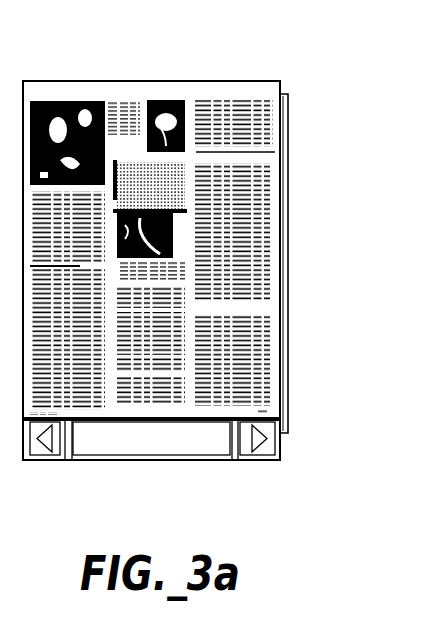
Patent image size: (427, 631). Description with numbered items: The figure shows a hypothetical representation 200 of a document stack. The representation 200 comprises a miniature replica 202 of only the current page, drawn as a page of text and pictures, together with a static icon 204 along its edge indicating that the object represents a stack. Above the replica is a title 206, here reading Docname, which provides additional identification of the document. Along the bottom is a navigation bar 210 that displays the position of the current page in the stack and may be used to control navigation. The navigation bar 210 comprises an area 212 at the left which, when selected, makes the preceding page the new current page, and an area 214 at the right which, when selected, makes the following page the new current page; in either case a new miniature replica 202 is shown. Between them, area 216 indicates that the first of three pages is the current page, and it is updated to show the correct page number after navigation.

The representation 200 is at (209, 267).
The miniature replica 202 is at (257, 81).
The static icon 204 is at (288, 156).
The title 206 is at (213, 66).
The navigation bar 210 is at (206, 454).
The area 212 is at (47, 461).
The area 214 is at (293, 418).
The area 216 is at (118, 461).